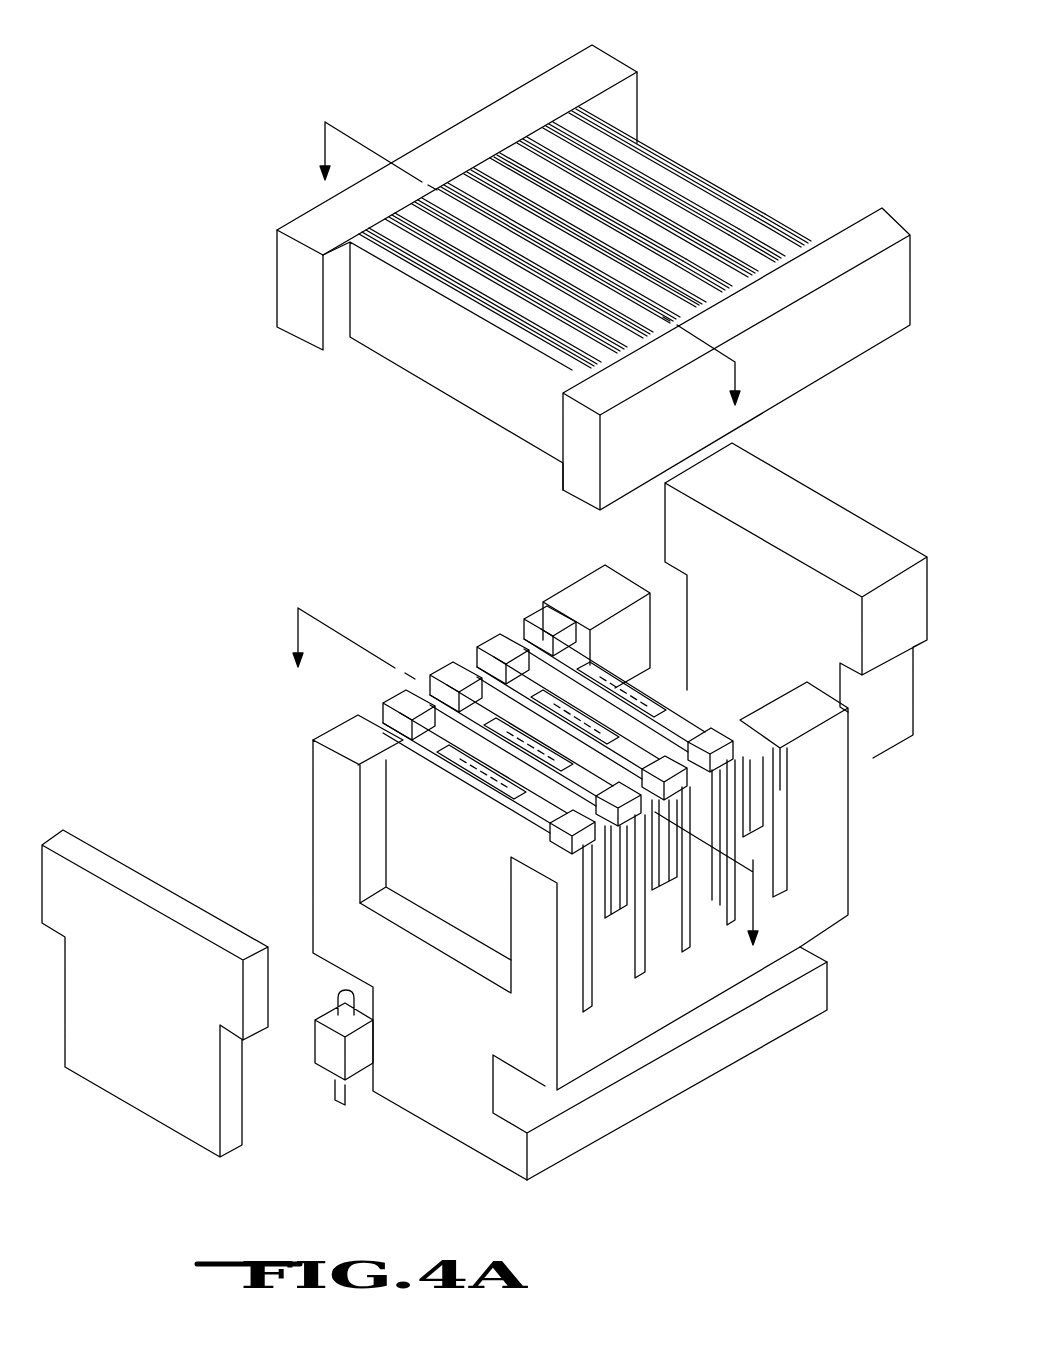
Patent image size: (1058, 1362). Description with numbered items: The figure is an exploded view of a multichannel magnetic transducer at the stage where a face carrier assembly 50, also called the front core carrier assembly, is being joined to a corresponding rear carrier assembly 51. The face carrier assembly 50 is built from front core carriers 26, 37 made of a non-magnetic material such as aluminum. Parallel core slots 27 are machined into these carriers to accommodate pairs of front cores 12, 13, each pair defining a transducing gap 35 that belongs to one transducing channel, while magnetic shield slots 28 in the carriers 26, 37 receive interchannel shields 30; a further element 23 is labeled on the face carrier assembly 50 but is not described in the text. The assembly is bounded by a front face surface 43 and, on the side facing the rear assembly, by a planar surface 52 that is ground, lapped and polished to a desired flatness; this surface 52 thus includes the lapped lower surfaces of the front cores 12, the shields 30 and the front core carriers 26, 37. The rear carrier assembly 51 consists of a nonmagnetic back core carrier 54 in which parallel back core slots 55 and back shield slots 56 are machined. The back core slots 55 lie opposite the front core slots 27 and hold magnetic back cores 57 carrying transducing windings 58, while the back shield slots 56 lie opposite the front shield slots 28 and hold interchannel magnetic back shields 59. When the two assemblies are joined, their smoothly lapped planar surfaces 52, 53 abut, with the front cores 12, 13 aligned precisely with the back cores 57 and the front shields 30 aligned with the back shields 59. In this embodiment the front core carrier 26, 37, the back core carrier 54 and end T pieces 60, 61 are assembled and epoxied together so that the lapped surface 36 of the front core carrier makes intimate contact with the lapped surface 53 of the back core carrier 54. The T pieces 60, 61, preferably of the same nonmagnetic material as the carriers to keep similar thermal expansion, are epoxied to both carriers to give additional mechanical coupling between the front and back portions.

The face carrier assembly 50 is at (399, 119).
The front face surface 43 is at (606, 63).
The front core carrier 26 is at (638, 111).
The planar surface 52 is at (292, 337).
The lapped surface 36 is at (407, 373).
The front core carrier 37 is at (908, 265).
The conductor strip 23 is at (497, 312).
The interchannel shield 30 is at (468, 181).
The core slot 27 is at (720, 292).
The transducing gap 35 is at (668, 203).
The front core 13 is at (773, 264).
The front core 12 is at (560, 134).
The magnetic shield slot 28 is at (812, 250).
The rear carrier assembly 51 is at (451, 606).
The back core carrier 54 is at (325, 823).
The interchannel magnetic back shield 59 is at (350, 722).
The lapped surface 53 is at (600, 582).
The magnetic back core 57 is at (520, 632).
The transducing winding 58 is at (447, 781).
The back core slot 55 is at (665, 890).
The back shield slot 56 is at (593, 1013).
The end "T" piece 61 is at (774, 589).
The end "T" piece 60 is at (156, 1033).